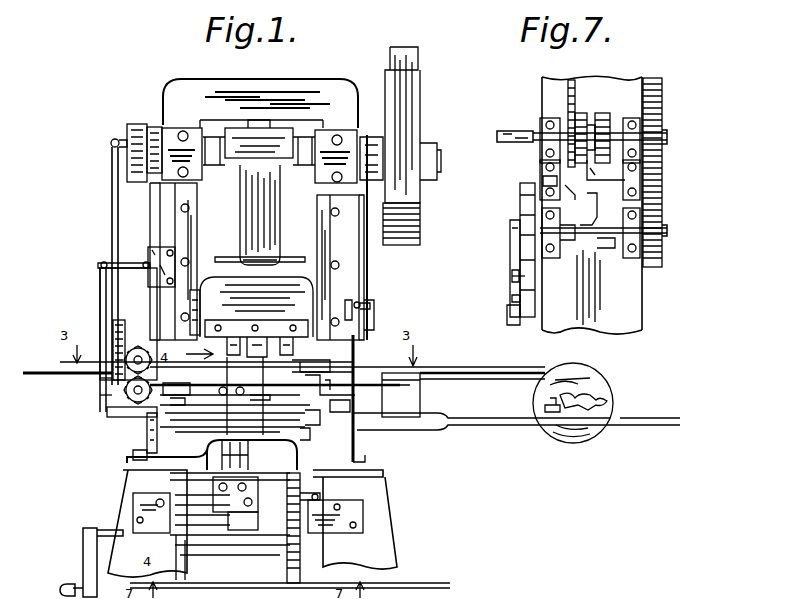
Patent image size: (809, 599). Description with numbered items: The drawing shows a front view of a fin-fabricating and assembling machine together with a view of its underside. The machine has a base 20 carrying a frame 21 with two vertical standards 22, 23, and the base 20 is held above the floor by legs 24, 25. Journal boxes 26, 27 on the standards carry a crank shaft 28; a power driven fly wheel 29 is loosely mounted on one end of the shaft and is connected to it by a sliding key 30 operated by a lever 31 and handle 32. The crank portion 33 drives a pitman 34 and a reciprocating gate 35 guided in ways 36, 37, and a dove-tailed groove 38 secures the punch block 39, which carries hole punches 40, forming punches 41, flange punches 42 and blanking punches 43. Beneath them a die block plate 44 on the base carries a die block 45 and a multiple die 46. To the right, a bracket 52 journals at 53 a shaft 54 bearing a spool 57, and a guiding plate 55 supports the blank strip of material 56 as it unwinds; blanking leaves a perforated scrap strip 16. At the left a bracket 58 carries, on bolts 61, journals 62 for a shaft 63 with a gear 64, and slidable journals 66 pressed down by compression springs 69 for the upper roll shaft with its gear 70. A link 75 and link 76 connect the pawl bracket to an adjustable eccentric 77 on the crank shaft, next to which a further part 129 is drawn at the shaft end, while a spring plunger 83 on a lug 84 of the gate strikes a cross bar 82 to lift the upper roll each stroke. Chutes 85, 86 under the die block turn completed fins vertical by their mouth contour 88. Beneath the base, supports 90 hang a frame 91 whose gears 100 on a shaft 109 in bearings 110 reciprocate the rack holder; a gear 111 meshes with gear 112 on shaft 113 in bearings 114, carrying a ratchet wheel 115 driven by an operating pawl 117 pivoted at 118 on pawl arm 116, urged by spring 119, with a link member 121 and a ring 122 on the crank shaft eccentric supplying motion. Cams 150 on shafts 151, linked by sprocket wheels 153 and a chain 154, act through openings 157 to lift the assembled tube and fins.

In FIG. 1, the perforated strip of scrap material 16 is at (42, 372).
In FIG. 1, the base 20 is at (148, 440).
In FIG. 1, the frame 21 is at (287, 88).
In FIG. 1, the vertical standard 22 is at (168, 235).
In FIG. 1, the vertical standard 23 is at (352, 258).
In FIG. 1, the standard or leg 24 is at (145, 268).
In FIG. 1, the standard or leg 25 is at (378, 498).
In FIG. 1, the journal box 26 is at (148, 125).
In FIG. 1, the journal box 27 is at (350, 140).
In FIG. 1, the crank shaft 28 is at (215, 135).
In FIG. 1, the power driven fly wheel 29 is at (420, 103).
In FIG. 1, the sliding key 30 is at (428, 206).
In FIG. 1, the lever 31 is at (367, 283).
In FIG. 1, the handle 32 is at (376, 305).
In FIG. 1, the crank portion 33 is at (292, 130).
In FIG. 1, the pitman 34 is at (258, 205).
In FIG. 1, the reciprocating gate 35 is at (310, 245).
In FIG. 1, the way 36 is at (178, 222).
In FIG. 1, the way 37 is at (365, 245).
In FIG. 1, the dove-tailed groove 38 is at (240, 300).
In FIG. 1, the punch block 39 is at (285, 357).
In FIG. 1, the hole punch 40 is at (355, 350).
In FIG. 1, the forming punch 41 is at (353, 360).
In FIG. 1, the flange punch 42 is at (255, 380).
In FIG. 1, the blanking punch 43 is at (238, 370).
In FIG. 1, the die block plate 44 is at (322, 407).
In FIG. 1, the die block 45 is at (340, 392).
In FIG. 1, the multiple die 46 is at (305, 435).
In FIG. 1, the bracket 52 is at (493, 418).
In FIG. 1, the journal point 53 is at (562, 412).
In FIG. 1, the shaft 54 is at (600, 400).
In FIG. 1, the guiding plate 55 is at (437, 375).
In FIG. 1, the blank strip of material 56 is at (505, 380).
In FIG. 1, the spool 57 is at (588, 370).
In FIG. 1, the bracket 58 is at (110, 412).
In FIG. 1, the bolt 61 is at (100, 330).
In FIG. 1, the journal 62 is at (110, 382).
In FIG. 1, the shaft 63 is at (108, 394).
In FIG. 1, the gear 64 is at (133, 425).
In FIG. 1, the journal 66 is at (113, 350).
In FIG. 1, the compression spring 69 is at (138, 345).
In FIG. 1, the gear 70 is at (134, 348).
In FIG. 1, the link 75 is at (103, 300).
In FIG. 1, the link 76 is at (113, 212).
In FIG. 1, the adjustable eccentric 77 is at (113, 138).
In FIG. 1, the cross bar 82 is at (195, 388).
In FIG. 1, the spring plunger 83 is at (208, 335).
In FIG. 1, the lug 84 is at (150, 302).
In FIG. 1, the chute 85 is at (190, 483).
In FIG. 1, the chute 86 is at (262, 455).
In FIG. 1, the chute mouth contour 88 is at (235, 503).
In FIG. 1, the support 90 is at (365, 510).
In FIG. 1, the frame 91 is at (265, 565).
In FIG. 7, the frame 91 is at (630, 307).
In FIG. 7, the gear 100 is at (603, 113).
In FIG. 7, the shaft 109 is at (668, 138).
In FIG. 7, the bearing 110 is at (628, 115).
In FIG. 7, the gear 111 is at (652, 108).
In FIG. 7, the gear 112 is at (655, 224).
In FIG. 7, the shaft 113 is at (608, 243).
In FIG. 7, the bearing 114 is at (628, 218).
In FIG. 7, the ratchet wheel 115 is at (522, 200).
In FIG. 7, the pawl bracket or arm 116 is at (515, 300).
In FIG. 7, the driving or operating pawl 117 is at (518, 262).
In FIG. 7, the pawl pivot 118 is at (515, 274).
In FIG. 7, the spring 119 is at (512, 278).
In FIG. 1, the link member 121 is at (150, 305).
In FIG. 1, the ring 122 is at (172, 135).
In FIG. 1, the knob 129 is at (168, 137).
In FIG. 7, the cam 150 is at (598, 243).
In FIG. 7, the shaft 151 is at (548, 172).
In FIG. 7, the sprocket wheel 153 is at (585, 200).
In FIG. 7, the chain 154 is at (565, 92).
In FIG. 7, the opening 157 is at (567, 258).